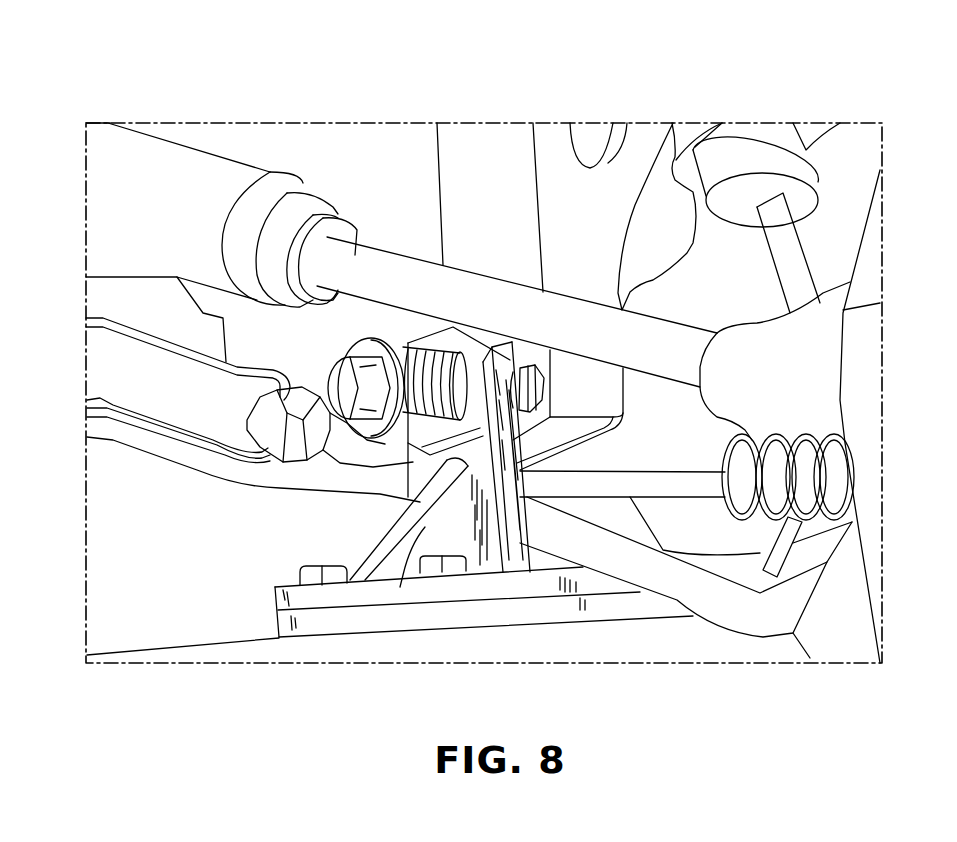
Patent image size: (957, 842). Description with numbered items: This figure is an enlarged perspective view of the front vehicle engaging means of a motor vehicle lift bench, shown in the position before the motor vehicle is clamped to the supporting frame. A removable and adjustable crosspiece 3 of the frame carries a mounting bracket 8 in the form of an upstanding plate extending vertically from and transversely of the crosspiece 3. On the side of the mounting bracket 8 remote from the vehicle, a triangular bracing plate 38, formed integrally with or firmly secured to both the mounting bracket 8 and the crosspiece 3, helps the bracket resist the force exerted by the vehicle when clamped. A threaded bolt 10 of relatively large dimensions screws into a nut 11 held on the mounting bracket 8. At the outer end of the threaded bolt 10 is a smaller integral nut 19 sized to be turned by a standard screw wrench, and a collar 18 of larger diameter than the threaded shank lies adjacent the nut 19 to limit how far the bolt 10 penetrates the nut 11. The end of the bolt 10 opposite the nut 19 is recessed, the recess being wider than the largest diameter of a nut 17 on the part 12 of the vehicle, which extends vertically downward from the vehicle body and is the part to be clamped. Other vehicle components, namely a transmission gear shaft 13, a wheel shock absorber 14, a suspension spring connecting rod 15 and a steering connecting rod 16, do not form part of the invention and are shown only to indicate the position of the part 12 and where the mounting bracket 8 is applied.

The crosspiece 3 is at (344, 597).
The mounting bracket 8 is at (485, 522).
The threaded bolt 10 is at (332, 362).
The nut 11 is at (465, 365).
The part of the motor vehicle 12 is at (597, 390).
The transmission gear shaft 13 is at (403, 280).
The wheel shock absorber 14 is at (742, 165).
The suspension spring connecting rod 15 is at (655, 483).
The steering connecting rod 16 is at (388, 455).
The nut 17 is at (523, 385).
The collar 18 is at (373, 427).
The nut 19 is at (348, 388).
The triangular bracing plate 38 is at (398, 587).